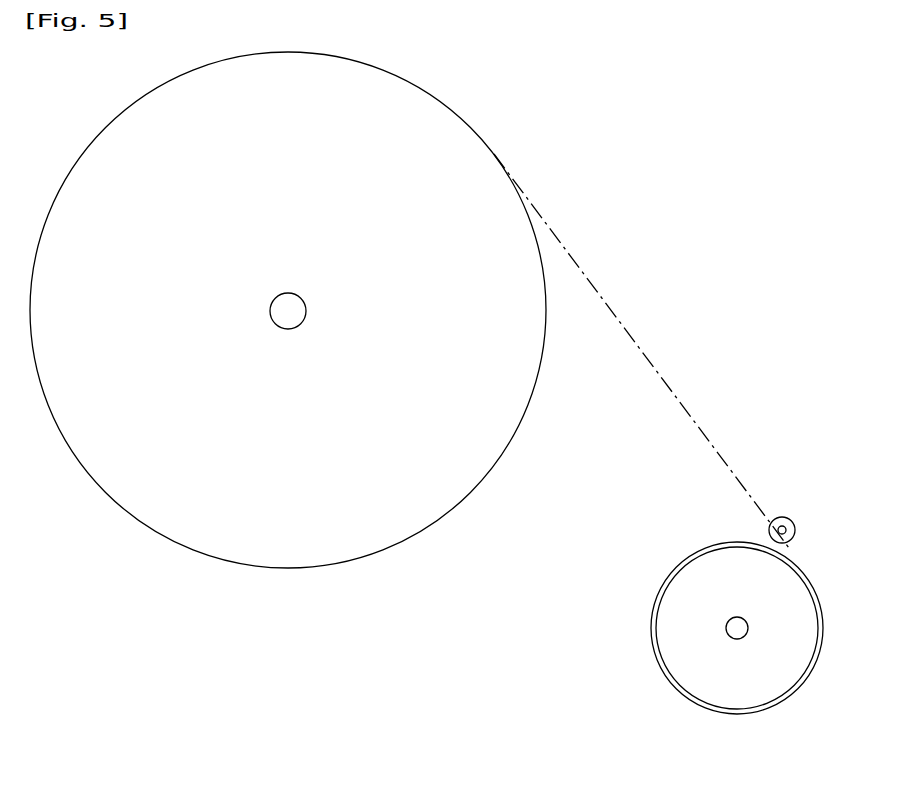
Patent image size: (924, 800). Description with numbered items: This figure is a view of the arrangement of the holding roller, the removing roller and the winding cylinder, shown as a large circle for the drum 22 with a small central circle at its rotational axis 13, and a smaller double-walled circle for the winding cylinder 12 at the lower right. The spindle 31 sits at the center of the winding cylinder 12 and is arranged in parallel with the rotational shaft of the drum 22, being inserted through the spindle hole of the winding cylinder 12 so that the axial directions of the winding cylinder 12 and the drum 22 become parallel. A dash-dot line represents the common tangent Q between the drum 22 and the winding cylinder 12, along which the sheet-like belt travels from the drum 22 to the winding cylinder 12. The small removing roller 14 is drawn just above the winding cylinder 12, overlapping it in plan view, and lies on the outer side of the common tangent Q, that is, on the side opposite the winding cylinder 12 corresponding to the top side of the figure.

The drum 22 is at (93, 460).
The shaft of roll 13 is at (294, 311).
The common tangent Q is at (658, 383).
The removing roller 14 is at (786, 517).
The winding cylinder 12 is at (703, 670).
The spindle 31 is at (746, 632).